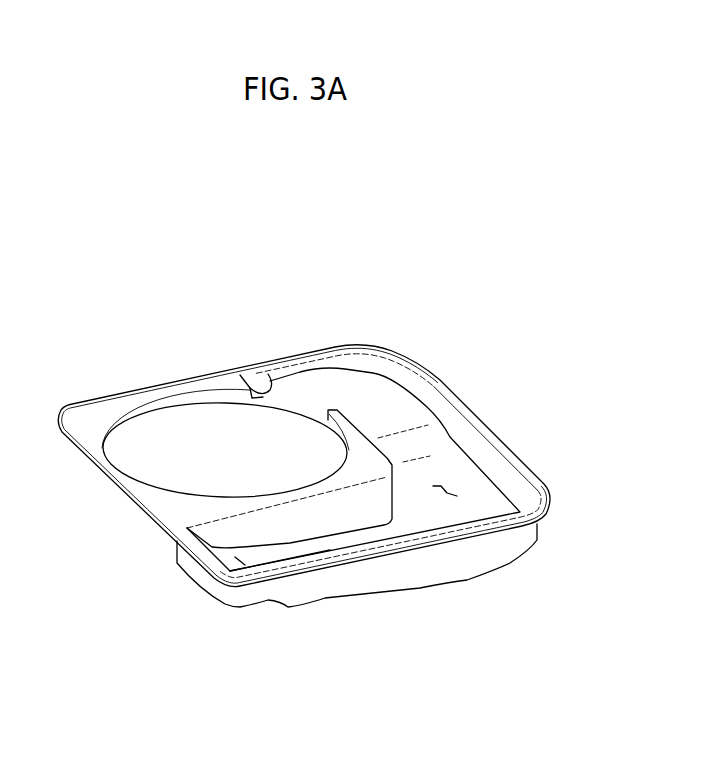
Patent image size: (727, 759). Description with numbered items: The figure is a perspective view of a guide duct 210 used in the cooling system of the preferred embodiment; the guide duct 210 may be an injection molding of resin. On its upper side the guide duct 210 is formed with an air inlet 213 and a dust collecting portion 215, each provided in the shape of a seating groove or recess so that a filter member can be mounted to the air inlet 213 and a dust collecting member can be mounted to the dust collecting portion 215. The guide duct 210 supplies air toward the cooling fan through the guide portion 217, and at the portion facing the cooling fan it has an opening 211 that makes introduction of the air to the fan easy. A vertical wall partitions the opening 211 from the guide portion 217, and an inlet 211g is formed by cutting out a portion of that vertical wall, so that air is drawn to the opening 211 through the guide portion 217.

The guide duct 210 is at (158, 235).
The opening 211 is at (135, 425).
The inlet 211g is at (272, 381).
The air inlet 213 is at (290, 554).
The dust collecting portion 215 is at (449, 492).
The guide portion 217 is at (366, 391).